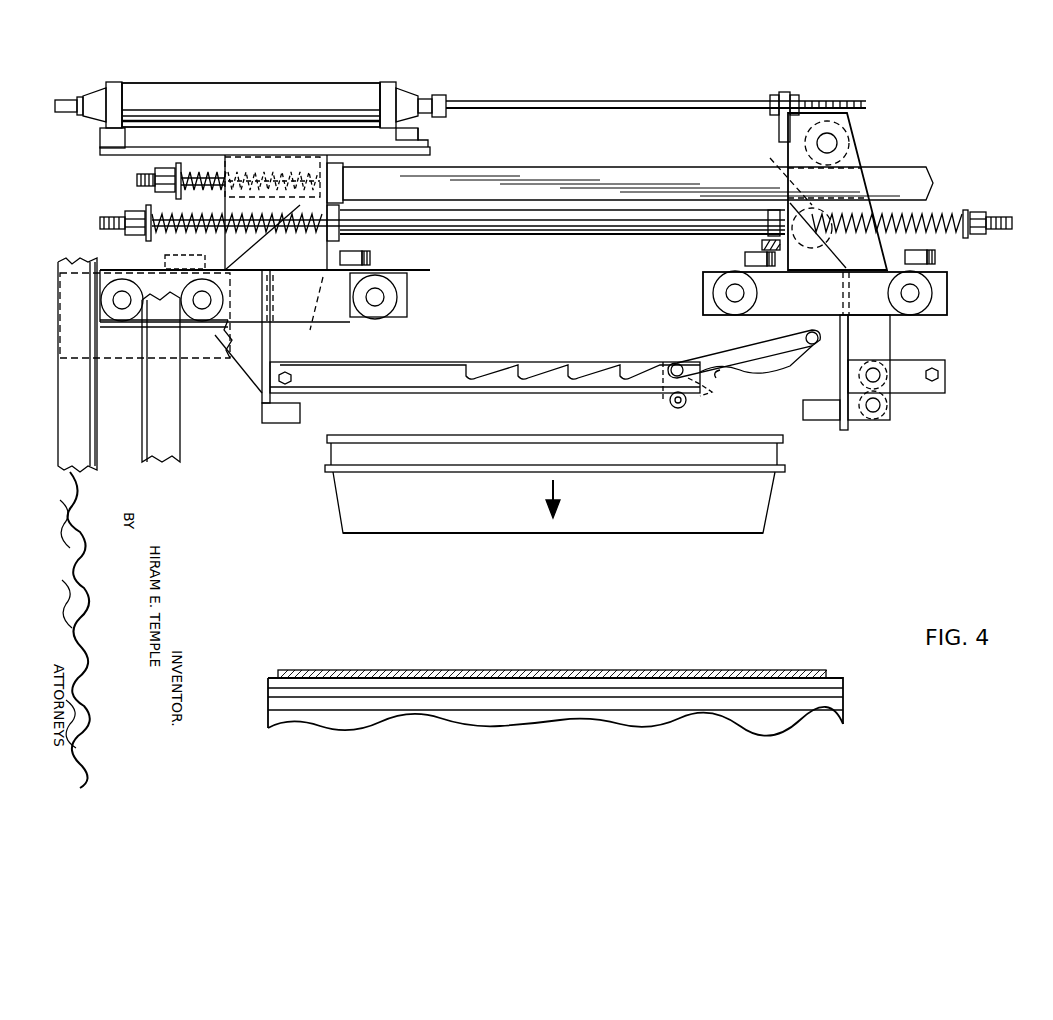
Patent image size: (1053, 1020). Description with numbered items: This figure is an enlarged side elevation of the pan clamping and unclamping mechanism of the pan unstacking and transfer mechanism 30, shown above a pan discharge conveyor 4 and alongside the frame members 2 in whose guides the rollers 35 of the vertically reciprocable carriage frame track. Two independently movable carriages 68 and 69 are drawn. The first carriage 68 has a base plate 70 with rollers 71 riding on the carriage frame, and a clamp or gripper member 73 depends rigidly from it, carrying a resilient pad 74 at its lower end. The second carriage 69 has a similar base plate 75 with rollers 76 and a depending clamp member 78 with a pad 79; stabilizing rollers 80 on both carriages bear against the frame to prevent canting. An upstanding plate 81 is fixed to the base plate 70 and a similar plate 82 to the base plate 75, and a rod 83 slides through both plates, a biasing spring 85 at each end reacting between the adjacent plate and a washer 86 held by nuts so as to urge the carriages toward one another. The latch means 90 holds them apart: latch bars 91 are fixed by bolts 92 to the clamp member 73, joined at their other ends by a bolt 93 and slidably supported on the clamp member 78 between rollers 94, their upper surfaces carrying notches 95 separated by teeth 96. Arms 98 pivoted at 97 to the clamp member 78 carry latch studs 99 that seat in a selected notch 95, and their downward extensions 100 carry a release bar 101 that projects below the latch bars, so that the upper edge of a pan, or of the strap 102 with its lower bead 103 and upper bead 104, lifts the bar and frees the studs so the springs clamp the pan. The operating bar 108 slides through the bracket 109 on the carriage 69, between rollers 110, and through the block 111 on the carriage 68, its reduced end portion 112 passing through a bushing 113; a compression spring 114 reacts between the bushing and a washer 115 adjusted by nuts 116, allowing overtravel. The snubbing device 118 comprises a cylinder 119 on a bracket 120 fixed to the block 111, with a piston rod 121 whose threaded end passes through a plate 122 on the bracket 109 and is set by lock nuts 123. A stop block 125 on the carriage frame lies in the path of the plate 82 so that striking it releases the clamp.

The frame members 2 is at (140, 396).
The pan discharge conveyor 4 is at (738, 660).
The pan unstacking and transfer mechanism 30 is at (978, 330).
The rollers 35 is at (120, 322).
The first carriage 68 is at (242, 412).
The second carriage 69 is at (878, 146).
The base plate 70 is at (408, 296).
The rollers 71 is at (222, 302).
The clamp or gripper member 73 is at (252, 376).
The resilient pad 74 is at (300, 414).
The base plate 75 is at (706, 290).
The rollers 76 is at (718, 306).
The clamp or gripper member 78 is at (880, 356).
The pad 79 is at (802, 412).
The stabilizing rollers 80 is at (362, 262).
The upstanding plate or flange 81 is at (340, 216).
The plate or flange 82 is at (778, 208).
The rod 83 is at (552, 236).
The biasing spring 85 is at (214, 214).
The washer 86 is at (132, 216).
The latch means 90 is at (632, 354).
The latch bars 91 is at (412, 366).
The bolts 92 is at (292, 374).
The bolt 93 is at (940, 376).
The rollers 94 is at (880, 408).
The notches 95 is at (522, 376).
The tooth 96 is at (478, 368).
The pivot 97 is at (812, 344).
The arms 98 is at (758, 364).
The latch bolt or stud 99 is at (682, 370).
The downwardly projecting extension 100 is at (712, 392).
The latch releasing bar or roller 101 is at (670, 404).
The strap 102 is at (326, 460).
The lower bead 103 is at (786, 474).
The upper bead 104 is at (783, 440).
The operating bar 108 is at (622, 176).
The upstanding bracket 109 is at (850, 130).
The rollers 110 is at (798, 156).
The block 111 is at (262, 260).
The reduced end portion 112 is at (162, 172).
The bushing 113 is at (338, 194).
The compression spring 114 is at (216, 176).
The washer 115 is at (557, 202).
The nuts 116 is at (150, 178).
The snubbing device 118 is at (452, 70).
The pneumatic or hydraulic cylinder 119 is at (258, 96).
The bracket 120 is at (318, 156).
The piston rod 121 is at (574, 102).
The plate 122 is at (779, 126).
The lock nuts 123 is at (782, 92).
The stop block 125 is at (760, 246).